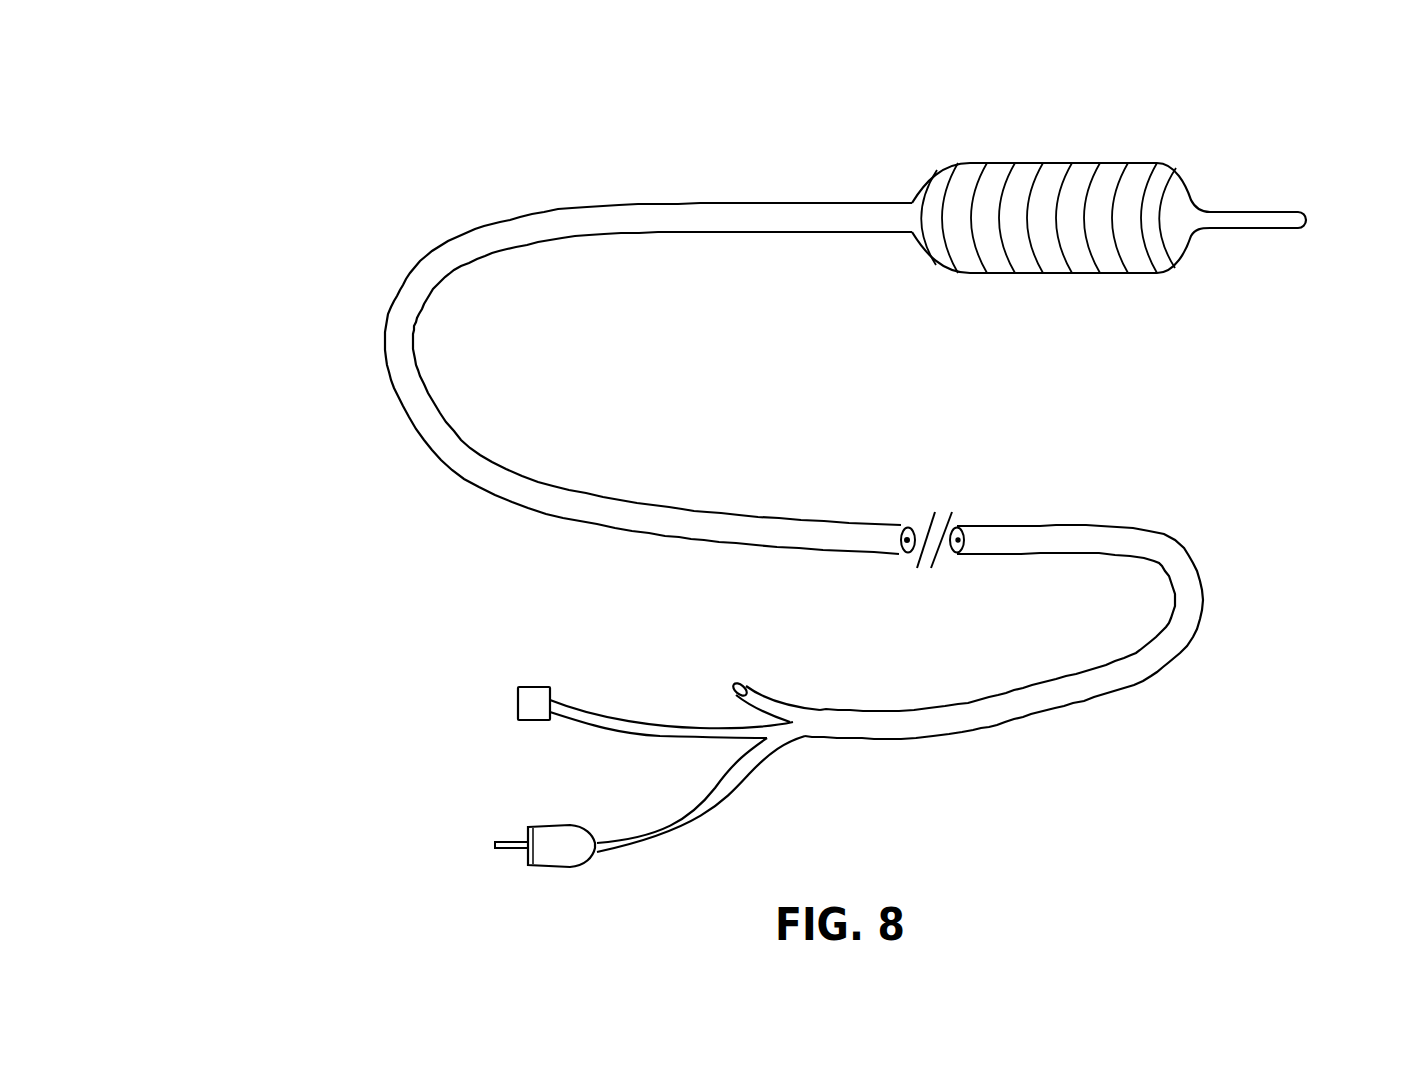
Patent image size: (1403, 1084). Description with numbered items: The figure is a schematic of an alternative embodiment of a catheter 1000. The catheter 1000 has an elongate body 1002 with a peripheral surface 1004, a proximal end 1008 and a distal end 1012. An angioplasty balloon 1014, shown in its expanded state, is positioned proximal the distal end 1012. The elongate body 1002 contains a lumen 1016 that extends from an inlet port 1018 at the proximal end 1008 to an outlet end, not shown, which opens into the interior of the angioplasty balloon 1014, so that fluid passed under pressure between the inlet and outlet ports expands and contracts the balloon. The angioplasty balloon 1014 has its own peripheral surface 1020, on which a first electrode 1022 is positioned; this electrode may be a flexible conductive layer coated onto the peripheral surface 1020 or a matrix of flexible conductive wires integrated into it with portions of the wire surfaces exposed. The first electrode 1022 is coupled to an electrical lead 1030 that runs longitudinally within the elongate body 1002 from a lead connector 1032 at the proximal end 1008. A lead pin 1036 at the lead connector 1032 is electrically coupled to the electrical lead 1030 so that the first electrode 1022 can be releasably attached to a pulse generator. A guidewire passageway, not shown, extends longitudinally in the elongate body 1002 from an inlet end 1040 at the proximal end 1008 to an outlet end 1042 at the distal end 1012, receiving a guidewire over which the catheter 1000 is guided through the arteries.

The catheter 1000 is at (327, 154).
The elongate body 1002 is at (421, 427).
The peripheral surface 1004 is at (664, 233).
The proximal end 1008 is at (435, 715).
The distal end 1012 is at (1316, 197).
The angioplasty balloon 1014 is at (1153, 182).
The lumen 1016 is at (909, 526).
The inlet port 1018 is at (532, 685).
The peripheral surface 1020 is at (1061, 274).
The first electrode 1022 is at (973, 187).
The electrical lead 1030 is at (956, 556).
The lead connector 1032 is at (541, 826).
The lead pin 1036 is at (505, 839).
The inlet end 1040 is at (735, 687).
The outlet end 1042 is at (1307, 221).